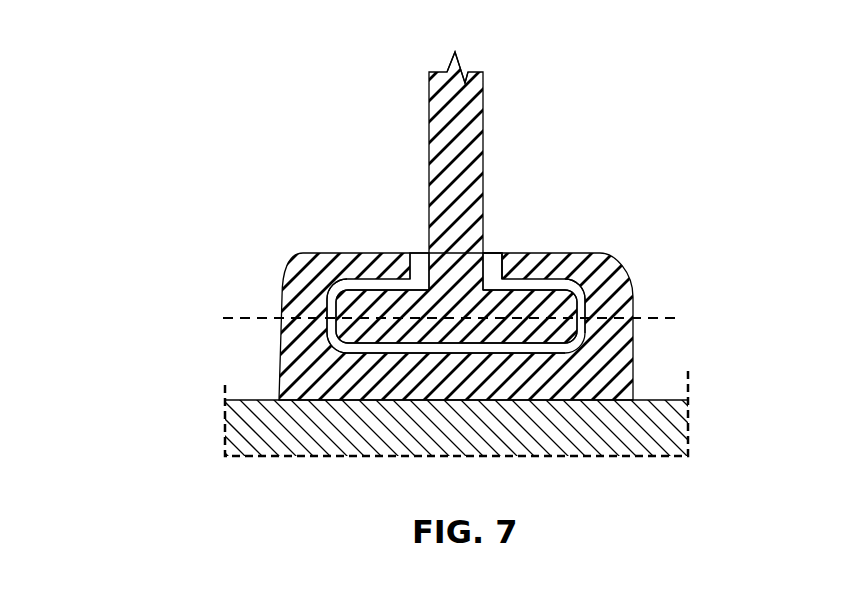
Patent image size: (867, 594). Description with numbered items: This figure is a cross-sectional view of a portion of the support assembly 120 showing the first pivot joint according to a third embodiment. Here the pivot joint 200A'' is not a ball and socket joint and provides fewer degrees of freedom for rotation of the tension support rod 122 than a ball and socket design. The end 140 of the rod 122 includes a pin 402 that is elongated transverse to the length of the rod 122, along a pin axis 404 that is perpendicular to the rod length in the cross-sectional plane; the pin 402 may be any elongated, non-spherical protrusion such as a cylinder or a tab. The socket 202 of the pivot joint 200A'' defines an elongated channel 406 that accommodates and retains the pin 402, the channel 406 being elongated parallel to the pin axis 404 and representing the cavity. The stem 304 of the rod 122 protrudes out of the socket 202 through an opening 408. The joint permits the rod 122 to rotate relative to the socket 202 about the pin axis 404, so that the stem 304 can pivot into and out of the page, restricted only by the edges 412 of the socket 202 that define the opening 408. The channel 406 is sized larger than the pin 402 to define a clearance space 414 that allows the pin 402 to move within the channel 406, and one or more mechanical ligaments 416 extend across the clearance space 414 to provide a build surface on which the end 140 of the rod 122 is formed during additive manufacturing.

The support assembly 120 is at (272, 88).
The pivot joint 200A'' is at (380, 230).
The socket 202 is at (300, 262).
The tension support rod 122 is at (432, 103).
The stem 304 is at (476, 104).
The pin 402 is at (377, 302).
The edges 412 is at (418, 265).
The opening 408 is at (488, 250).
The channel 406 is at (582, 292).
The pin axis 404 is at (232, 318).
The clearance space 414 is at (331, 328).
The end 140 is at (583, 333).
The mechanical ligaments 416 is at (370, 345).